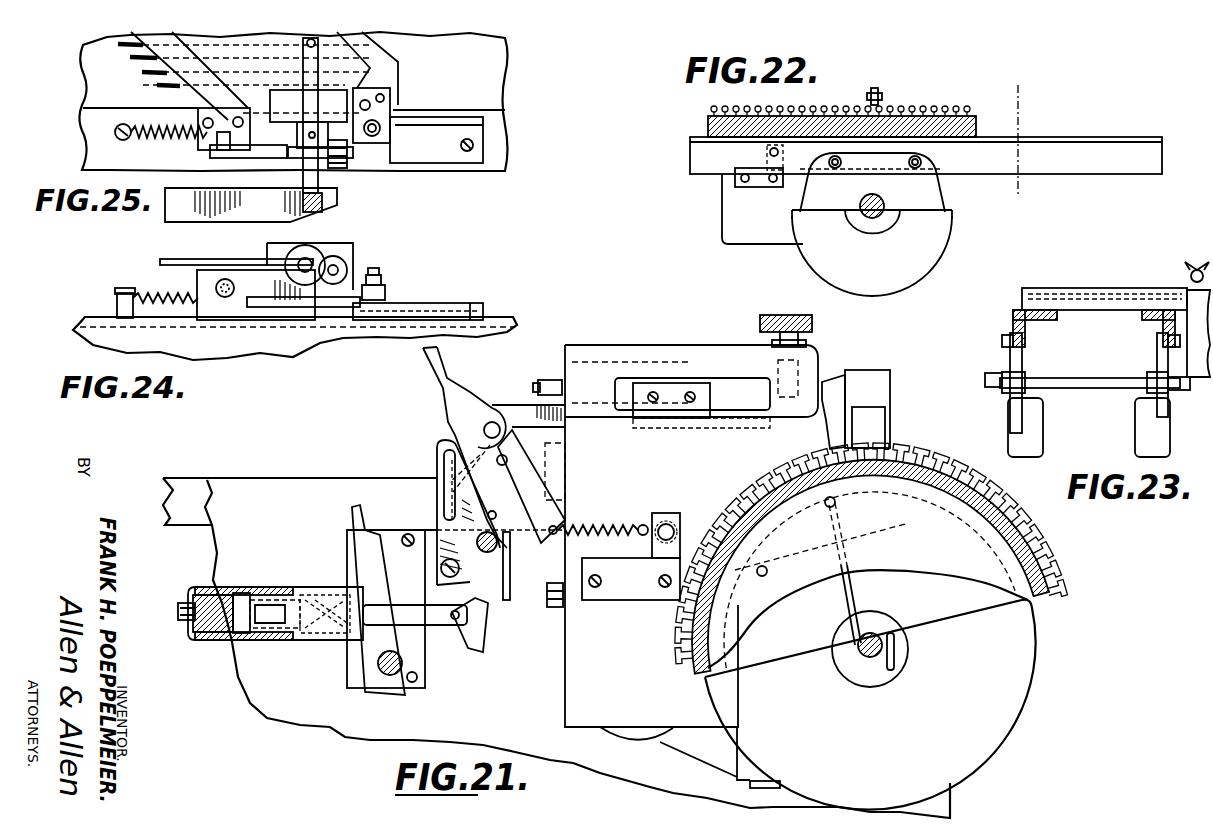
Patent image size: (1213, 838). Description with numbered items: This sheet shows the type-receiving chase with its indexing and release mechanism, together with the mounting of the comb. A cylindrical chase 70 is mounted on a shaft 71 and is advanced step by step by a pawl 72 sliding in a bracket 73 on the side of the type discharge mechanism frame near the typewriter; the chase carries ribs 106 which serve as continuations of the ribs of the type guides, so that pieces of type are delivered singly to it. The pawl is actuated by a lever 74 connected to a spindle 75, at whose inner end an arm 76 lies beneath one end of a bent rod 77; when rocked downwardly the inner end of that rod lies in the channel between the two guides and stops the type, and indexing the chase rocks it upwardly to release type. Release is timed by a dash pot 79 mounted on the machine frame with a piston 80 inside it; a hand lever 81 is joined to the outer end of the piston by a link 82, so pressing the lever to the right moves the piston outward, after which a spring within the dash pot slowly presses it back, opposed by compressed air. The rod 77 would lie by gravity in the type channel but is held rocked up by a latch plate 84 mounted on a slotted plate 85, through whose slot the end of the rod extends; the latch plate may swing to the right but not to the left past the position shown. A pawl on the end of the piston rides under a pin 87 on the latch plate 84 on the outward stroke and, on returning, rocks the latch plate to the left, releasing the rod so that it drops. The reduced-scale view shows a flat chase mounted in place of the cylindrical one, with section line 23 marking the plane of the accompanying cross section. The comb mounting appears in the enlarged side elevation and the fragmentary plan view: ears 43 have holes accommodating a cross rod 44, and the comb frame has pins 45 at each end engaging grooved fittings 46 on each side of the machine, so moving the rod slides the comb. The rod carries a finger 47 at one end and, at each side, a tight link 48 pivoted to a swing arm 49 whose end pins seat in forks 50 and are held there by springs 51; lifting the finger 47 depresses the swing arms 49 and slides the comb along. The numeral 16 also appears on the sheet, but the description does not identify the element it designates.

In FIG. 21, the toothed ring sector 16 is at (690, 645).
In FIG. 22, the section line 23 is at (1005, 191).
In FIG. 25, the ears 43 is at (340, 98).
In FIG. 24, the ears 43 is at (342, 258).
In FIG. 25, the cross rod 44 is at (338, 170).
In FIG. 24, the cross rod 44 is at (318, 255).
In FIG. 25, the pins 45 is at (388, 140).
In FIG. 24, the pins 45 is at (388, 290).
In FIG. 25, the grooved fittings 46 is at (450, 132).
In FIG. 24, the grooved fittings 46 is at (440, 303).
In FIG. 25, the finger 47 is at (175, 212).
In FIG. 24, the finger 47 is at (160, 262).
In FIG. 24, the tight link 48 is at (350, 265).
In FIG. 25, the swing arm 49 is at (277, 157).
In FIG. 24, the swing arm 49 is at (317, 333).
In FIG. 24, the forks 50 is at (205, 275).
In FIG. 24, the springs 51 is at (124, 290).
In FIG. 21, the cylindrical chase 70 is at (927, 465).
In FIG. 21, the shaft 71 is at (877, 630).
In FIG. 21, the pawl 72 is at (807, 432).
In FIG. 21, the bracket 73 is at (648, 430).
In FIG. 21, the lever 74 is at (477, 380).
In FIG. 21, the spindle 75 is at (505, 465).
In FIG. 21, the arm 76 is at (445, 493).
In FIG. 21, the rod 77 is at (440, 455).
In FIG. 21, the dash pot 79 is at (247, 586).
In FIG. 21, the piston 80 is at (257, 637).
In FIG. 21, the hand lever 81 is at (357, 550).
In FIG. 21, the link 82 is at (433, 632).
In FIG. 21, the latch plate 84 is at (503, 557).
In FIG. 21, the slotted plate 85 is at (443, 447).
In FIG. 21, the pin 87 is at (498, 617).
In FIG. 21, the ribs 106 is at (1037, 533).